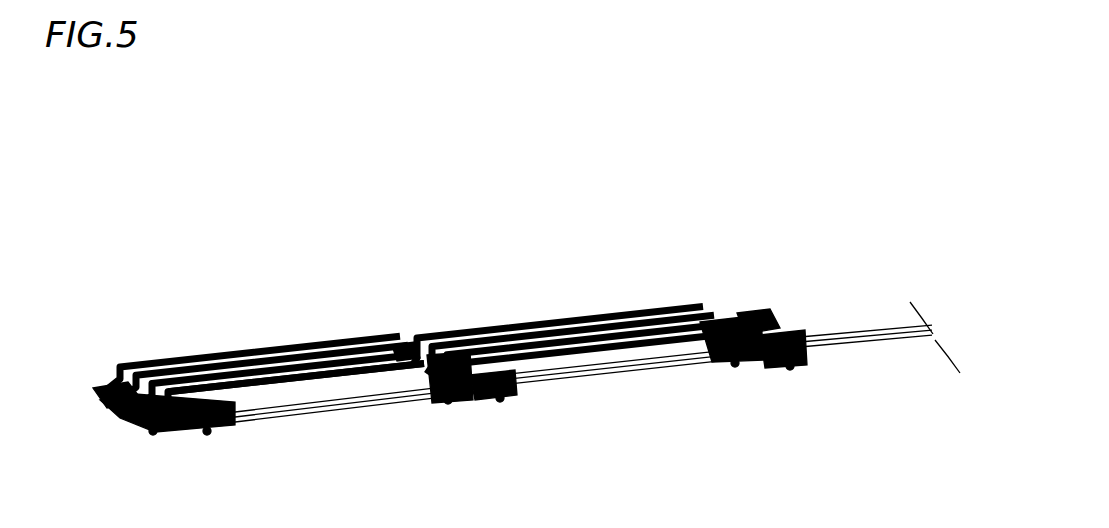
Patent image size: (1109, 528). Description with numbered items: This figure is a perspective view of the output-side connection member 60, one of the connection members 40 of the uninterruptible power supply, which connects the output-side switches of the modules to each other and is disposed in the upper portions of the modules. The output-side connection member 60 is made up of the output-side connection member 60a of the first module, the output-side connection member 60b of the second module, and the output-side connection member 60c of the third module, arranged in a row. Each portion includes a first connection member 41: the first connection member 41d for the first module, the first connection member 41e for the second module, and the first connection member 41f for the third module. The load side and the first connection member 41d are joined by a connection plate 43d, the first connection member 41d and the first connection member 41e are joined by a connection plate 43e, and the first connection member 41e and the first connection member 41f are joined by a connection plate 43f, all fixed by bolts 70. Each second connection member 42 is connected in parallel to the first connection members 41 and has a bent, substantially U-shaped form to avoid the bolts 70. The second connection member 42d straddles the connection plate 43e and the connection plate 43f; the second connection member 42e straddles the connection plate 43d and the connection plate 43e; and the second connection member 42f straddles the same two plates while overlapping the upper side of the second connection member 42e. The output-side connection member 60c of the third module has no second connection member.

The connection member 40 is at (234, 157).
The output-side connection member 60 is at (515, 291).
The output-side connection member 60a is at (269, 285).
The output-side connection member 60b is at (570, 252).
The output-side connection member 60c is at (836, 229).
The bolt 70 is at (112, 382).
The second connection member 42 is at (420, 380).
The second connection member 42d is at (555, 330).
The second connection member 42e is at (293, 397).
The second connection member 42f is at (275, 382).
The first connection member 41 is at (560, 405).
The first connection member 41d is at (348, 412).
The first connection member 41e is at (623, 385).
The first connection member 41f is at (870, 355).
The connection plate 43d is at (175, 430).
The connection plate 43e is at (471, 397).
The connection plate 43f is at (722, 315).